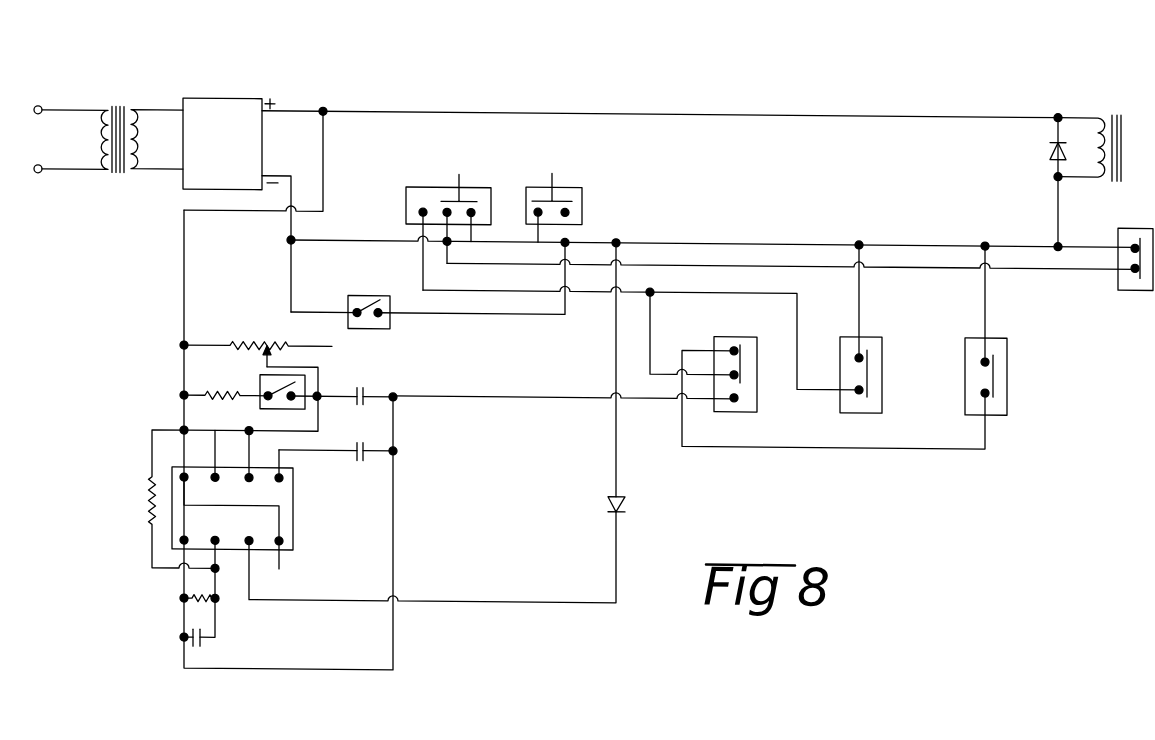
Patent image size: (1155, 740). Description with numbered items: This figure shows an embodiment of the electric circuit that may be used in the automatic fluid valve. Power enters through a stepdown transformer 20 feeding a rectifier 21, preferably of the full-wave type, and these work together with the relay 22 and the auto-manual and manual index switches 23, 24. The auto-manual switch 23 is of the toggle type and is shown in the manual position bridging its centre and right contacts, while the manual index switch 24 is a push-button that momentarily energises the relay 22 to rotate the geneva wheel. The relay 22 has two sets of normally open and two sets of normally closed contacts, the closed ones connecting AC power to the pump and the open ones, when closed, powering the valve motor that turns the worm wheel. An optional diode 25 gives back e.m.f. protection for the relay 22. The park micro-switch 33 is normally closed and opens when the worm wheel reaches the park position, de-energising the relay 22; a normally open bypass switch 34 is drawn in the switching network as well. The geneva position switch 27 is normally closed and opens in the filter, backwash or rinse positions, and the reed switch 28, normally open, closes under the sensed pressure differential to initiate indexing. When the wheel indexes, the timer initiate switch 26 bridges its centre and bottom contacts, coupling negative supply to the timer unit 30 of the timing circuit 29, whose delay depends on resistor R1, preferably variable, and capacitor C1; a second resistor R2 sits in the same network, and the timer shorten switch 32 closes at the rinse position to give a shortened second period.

The stepdown transformer 20 is at (108, 115).
The rectifier 21 is at (200, 108).
The relay 22 is at (1109, 115).
The auto-manual switch 23 is at (437, 160).
The manual index switch 24 is at (563, 185).
The diode 25 is at (1024, 160).
The timer initiate switch 26 is at (745, 400).
The geneva position switch 27 is at (870, 398).
The reed switch 28 is at (998, 400).
The timing circuit 29 is at (407, 468).
The timer unit 30 is at (197, 526).
The timer shorten switch 32 is at (260, 381).
The park micro-switch 33 is at (1133, 272).
The switch 34 is at (367, 295).
The resistor R1 is at (247, 323).
The resistor R2 is at (216, 417).
The capacitor C1 is at (374, 384).